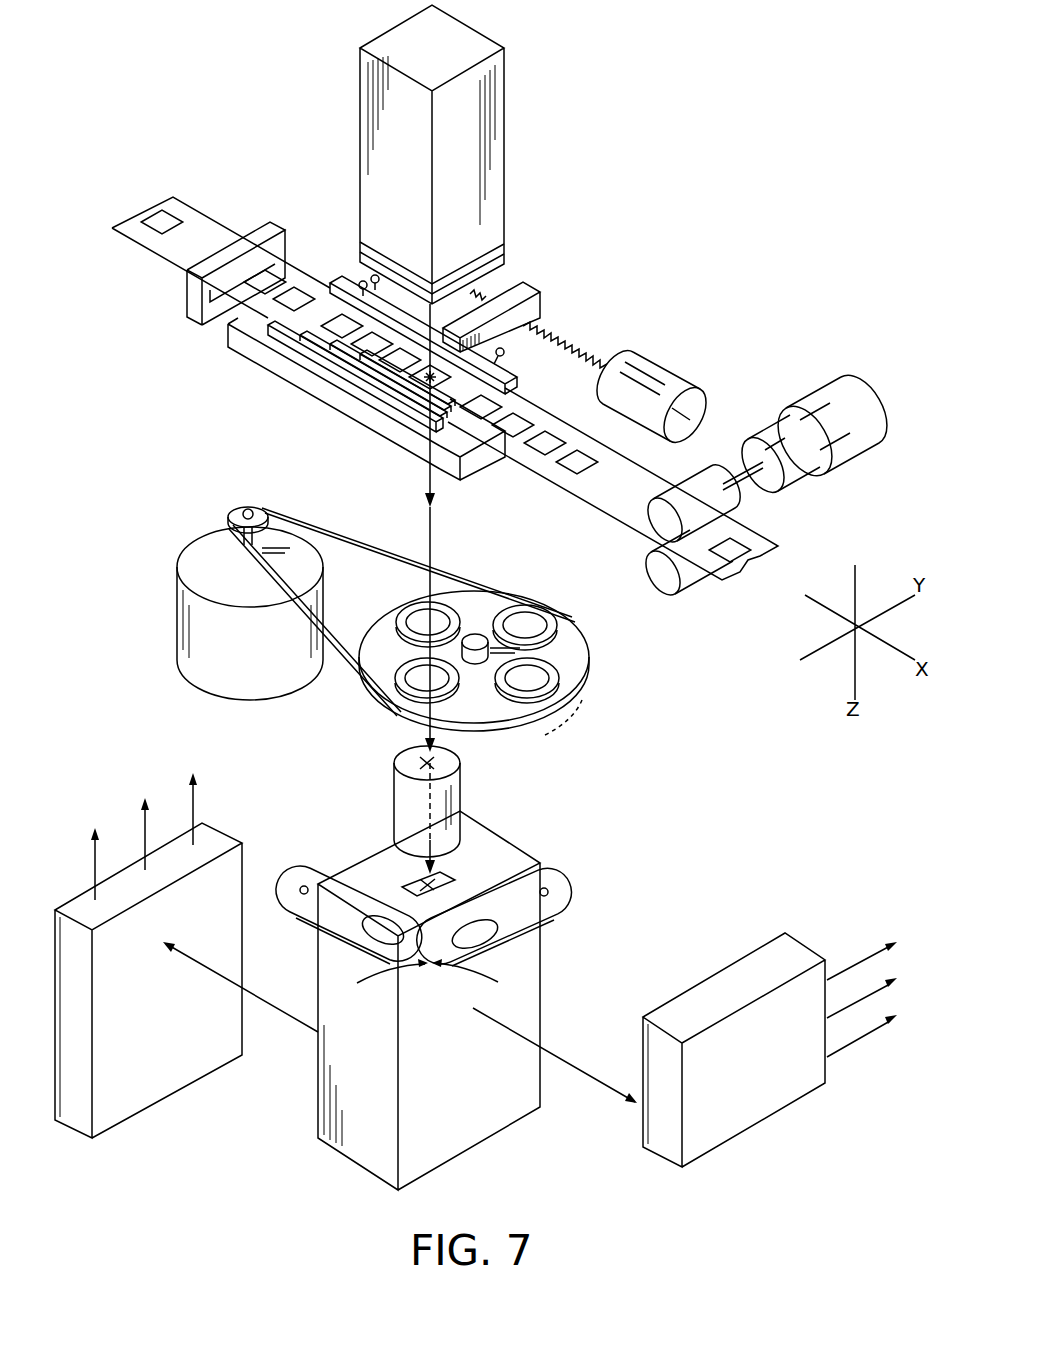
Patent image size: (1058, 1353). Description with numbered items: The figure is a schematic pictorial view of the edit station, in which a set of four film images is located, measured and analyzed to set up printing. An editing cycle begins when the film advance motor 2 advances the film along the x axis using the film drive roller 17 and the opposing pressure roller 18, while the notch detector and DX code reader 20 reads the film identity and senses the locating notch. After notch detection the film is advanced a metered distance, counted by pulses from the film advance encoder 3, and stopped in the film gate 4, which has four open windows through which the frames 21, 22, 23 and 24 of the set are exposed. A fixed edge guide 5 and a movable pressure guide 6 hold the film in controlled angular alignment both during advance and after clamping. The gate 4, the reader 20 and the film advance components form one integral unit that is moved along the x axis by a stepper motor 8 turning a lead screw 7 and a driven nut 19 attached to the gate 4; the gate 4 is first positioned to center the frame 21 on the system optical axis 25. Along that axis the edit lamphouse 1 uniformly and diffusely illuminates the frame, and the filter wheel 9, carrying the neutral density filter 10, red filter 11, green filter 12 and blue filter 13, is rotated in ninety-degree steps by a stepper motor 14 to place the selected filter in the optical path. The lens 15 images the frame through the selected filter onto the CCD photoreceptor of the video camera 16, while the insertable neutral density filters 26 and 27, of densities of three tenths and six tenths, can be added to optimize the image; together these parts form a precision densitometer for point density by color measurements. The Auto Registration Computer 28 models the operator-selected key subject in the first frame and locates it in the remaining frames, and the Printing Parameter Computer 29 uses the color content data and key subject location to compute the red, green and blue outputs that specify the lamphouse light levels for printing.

The edit lamphouse 1 is at (505, 118).
The film advance motor 2 is at (808, 480).
The film advance encoder 3 is at (878, 418).
The film gate 4 is at (395, 433).
The fixed edge guide 5 is at (236, 350).
The movable pressure guide 6 is at (338, 268).
The lead screw 7 is at (575, 332).
The stepper motor 8 is at (670, 375).
The filter wheel 9 is at (590, 657).
The neutral density filter 10 is at (400, 695).
The red filter 11 is at (540, 695).
The green filter 12 is at (545, 605).
The blue filter 13 is at (410, 610).
The stepper motor 14 is at (180, 570).
The lens 15 is at (470, 790).
The video camera 16 is at (533, 992).
The film drive roller 17 is at (745, 508).
The pressure roller 18 is at (673, 597).
The driven nut 19 is at (538, 300).
The notch detector and DX code reader 20 is at (190, 312).
The frame 21 is at (372, 425).
The frame 22 is at (340, 408).
The frame 23 is at (312, 393).
The frame 24 is at (285, 376).
The system optical axis 25 is at (437, 510).
The insertable neutral density filter 26 is at (300, 915).
The insertable neutral density filter 27 is at (575, 888).
The Auto Registration Computer 28 is at (140, 1095).
The Printing Parameter Computer 29 is at (757, 960).